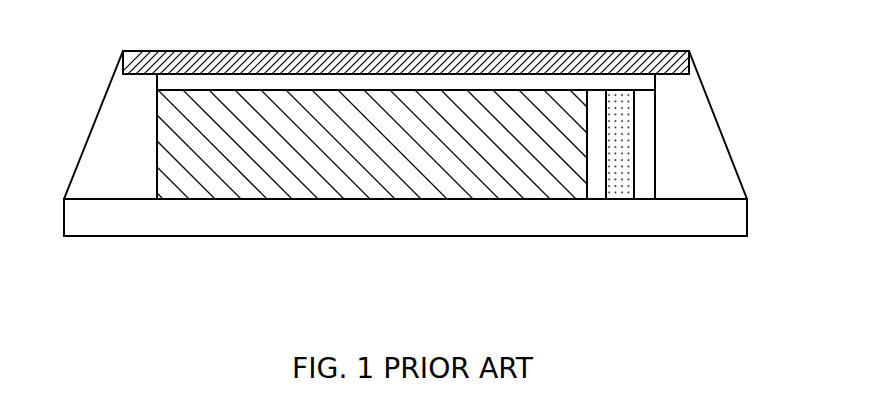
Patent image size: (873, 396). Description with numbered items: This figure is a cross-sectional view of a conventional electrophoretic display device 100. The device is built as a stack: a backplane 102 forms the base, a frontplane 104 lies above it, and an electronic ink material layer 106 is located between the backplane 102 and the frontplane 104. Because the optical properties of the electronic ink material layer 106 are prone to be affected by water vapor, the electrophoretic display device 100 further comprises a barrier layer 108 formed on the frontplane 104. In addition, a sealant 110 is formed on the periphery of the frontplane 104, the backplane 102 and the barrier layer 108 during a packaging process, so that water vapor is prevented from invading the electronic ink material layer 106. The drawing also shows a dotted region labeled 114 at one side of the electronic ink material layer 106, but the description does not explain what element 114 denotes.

The electrophoretic display device 100 is at (800, 66).
The backplane 102 is at (723, 218).
The frontplane 104 is at (635, 83).
The electronic ink material layer 106 is at (545, 182).
The barrier layer 108 is at (142, 63).
The sealant 110 is at (120, 143).
The light source 114 is at (617, 148).